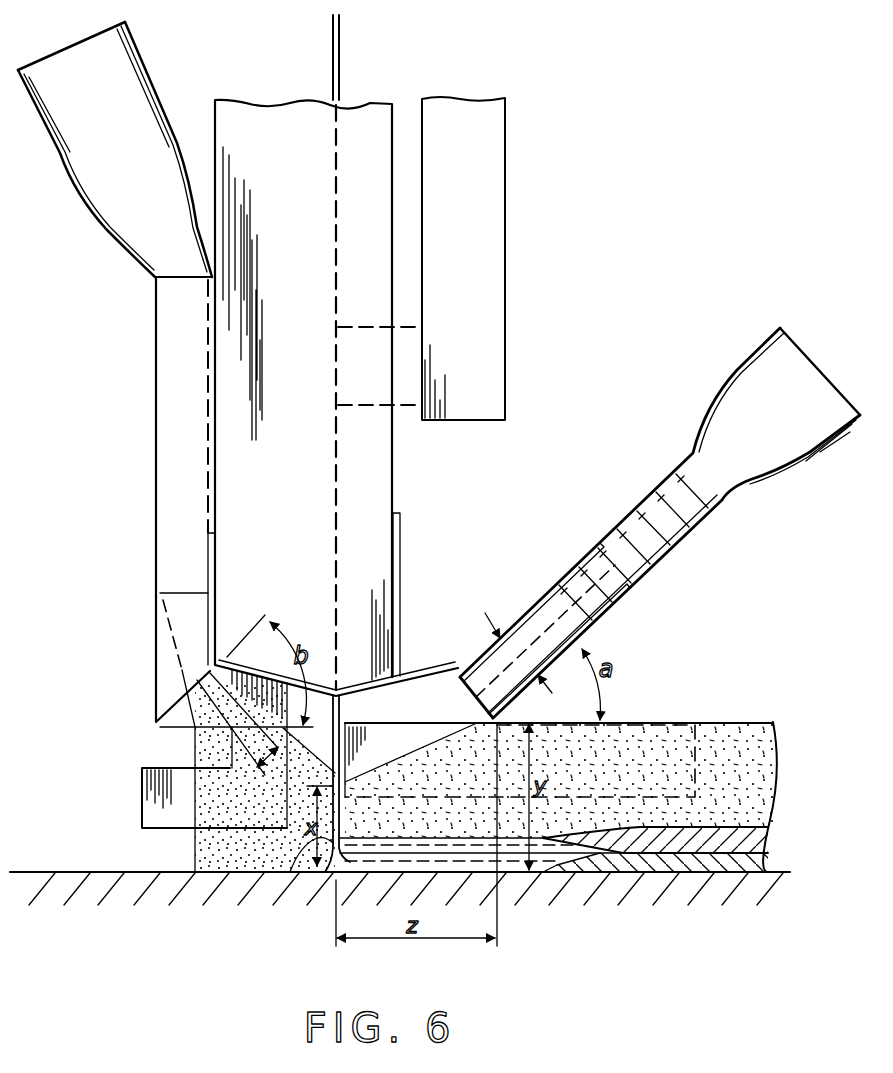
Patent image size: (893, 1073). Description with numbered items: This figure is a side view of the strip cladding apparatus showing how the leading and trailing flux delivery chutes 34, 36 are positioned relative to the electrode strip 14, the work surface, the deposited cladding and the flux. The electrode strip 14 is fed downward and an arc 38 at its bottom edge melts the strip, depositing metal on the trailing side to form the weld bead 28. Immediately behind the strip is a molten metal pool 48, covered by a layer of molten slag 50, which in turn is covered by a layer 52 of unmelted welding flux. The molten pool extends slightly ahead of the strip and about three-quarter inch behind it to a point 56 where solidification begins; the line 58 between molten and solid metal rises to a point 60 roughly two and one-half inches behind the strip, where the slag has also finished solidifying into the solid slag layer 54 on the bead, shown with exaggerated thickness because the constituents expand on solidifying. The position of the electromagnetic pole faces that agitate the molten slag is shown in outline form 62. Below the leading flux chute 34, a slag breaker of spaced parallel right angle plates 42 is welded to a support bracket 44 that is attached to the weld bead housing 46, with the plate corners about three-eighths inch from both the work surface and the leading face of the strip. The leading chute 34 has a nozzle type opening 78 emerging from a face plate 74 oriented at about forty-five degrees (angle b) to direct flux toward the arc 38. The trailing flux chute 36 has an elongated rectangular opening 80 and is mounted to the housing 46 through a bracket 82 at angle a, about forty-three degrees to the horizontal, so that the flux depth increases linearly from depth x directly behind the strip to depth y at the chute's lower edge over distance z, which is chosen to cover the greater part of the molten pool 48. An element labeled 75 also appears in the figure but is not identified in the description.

The electrode strip 14 is at (342, 712).
The weld bead 28 is at (733, 870).
The leading flux delivery chute 34 is at (155, 402).
The trailing flux delivery chute 36 is at (687, 543).
The electric arc 38 is at (333, 871).
The spaced parallel plates 42 is at (142, 800).
The support bracket 44 is at (208, 563).
The weld bead housing 46 is at (230, 104).
The molten metal pool 48 is at (393, 872).
The layer of molten slag 50 is at (465, 872).
The layer of unmelted welding flux 52 is at (765, 722).
The solid slag layer 54 is at (775, 825).
The point where solidification begins 56 is at (487, 877).
The line between molten and solid metal 58 is at (577, 873).
The point where the molten pool terminates 60 is at (637, 873).
The outline of the magnetic pole faces 62 is at (710, 722).
The face plate 74 is at (163, 726).
The granular flux layer 75 is at (240, 760).
The nozzle type opening 78 is at (210, 733).
The elongated rectangular opening 80 is at (462, 691).
The bracket 82 is at (406, 568).